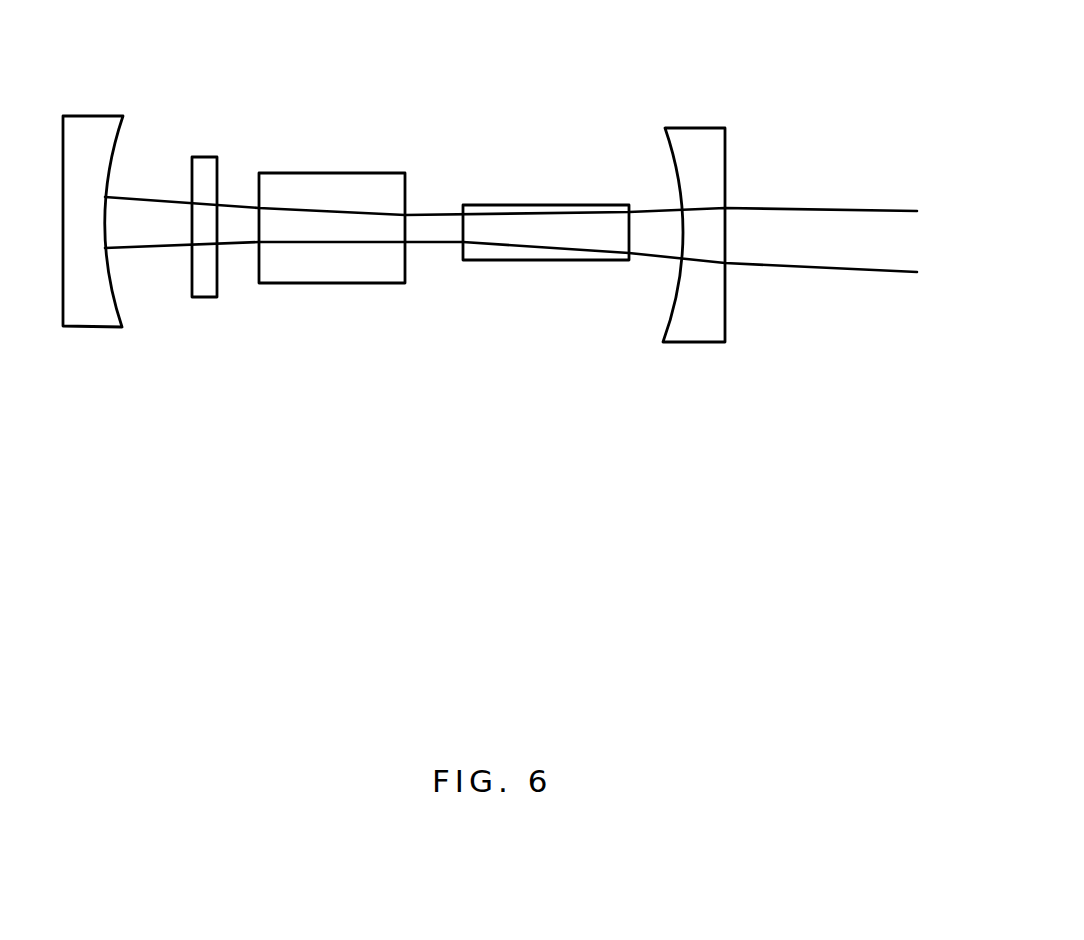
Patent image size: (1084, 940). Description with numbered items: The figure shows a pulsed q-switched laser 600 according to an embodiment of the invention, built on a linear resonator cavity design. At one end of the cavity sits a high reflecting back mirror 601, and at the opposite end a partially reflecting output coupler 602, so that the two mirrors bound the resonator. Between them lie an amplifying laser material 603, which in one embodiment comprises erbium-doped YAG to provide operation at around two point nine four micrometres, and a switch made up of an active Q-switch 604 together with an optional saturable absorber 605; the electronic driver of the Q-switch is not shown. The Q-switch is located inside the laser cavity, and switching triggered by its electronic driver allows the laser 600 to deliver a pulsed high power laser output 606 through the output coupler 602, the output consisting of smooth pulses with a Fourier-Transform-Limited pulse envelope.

The pulsed q-switched laser 600 is at (169, 419).
The high reflecting back mirror 601 is at (91, 135).
The partially reflecting output coupler 602 is at (678, 136).
The amplifying laser material 603 is at (471, 208).
The active Q-switch 604 is at (294, 184).
The saturable absorber 605 is at (201, 168).
The pulsed high power laser output 606 is at (829, 226).